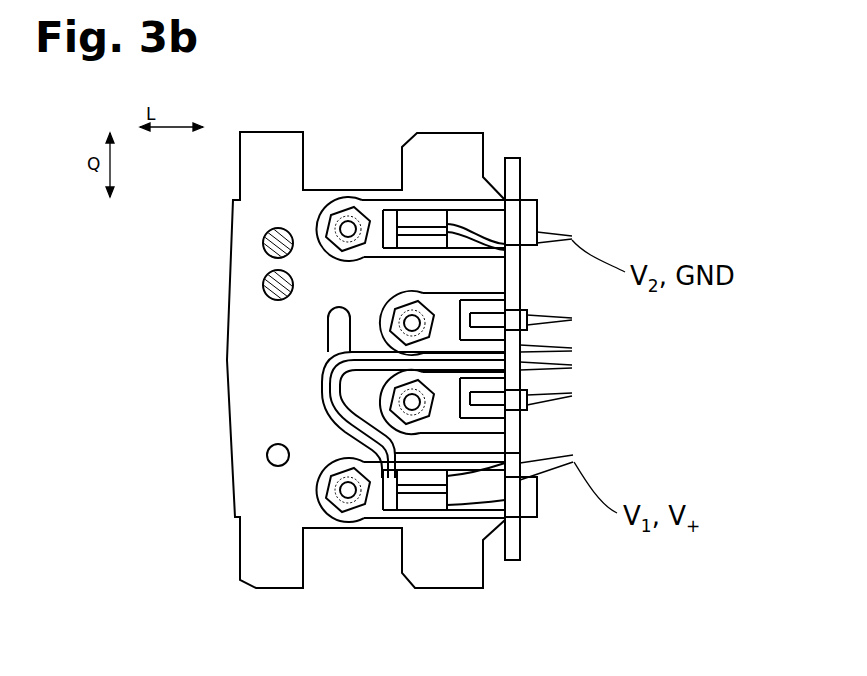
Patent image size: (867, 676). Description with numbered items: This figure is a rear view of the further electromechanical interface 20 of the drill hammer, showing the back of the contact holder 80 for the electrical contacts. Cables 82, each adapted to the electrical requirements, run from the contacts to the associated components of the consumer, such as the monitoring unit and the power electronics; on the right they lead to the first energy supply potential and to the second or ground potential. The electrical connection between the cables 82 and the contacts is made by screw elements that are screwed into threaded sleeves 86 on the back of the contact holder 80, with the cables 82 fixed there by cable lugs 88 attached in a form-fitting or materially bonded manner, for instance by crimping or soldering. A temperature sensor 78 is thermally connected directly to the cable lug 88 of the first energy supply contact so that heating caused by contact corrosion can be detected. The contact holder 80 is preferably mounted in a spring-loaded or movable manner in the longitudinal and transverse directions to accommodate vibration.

The electromechanical interface 20 is at (641, 111).
The temperature sensor 78 is at (392, 498).
The contact holder 80 is at (270, 150).
The cables 82 is at (574, 237).
The threaded sleeves 86 is at (345, 228).
The cable lugs 88 is at (425, 218).